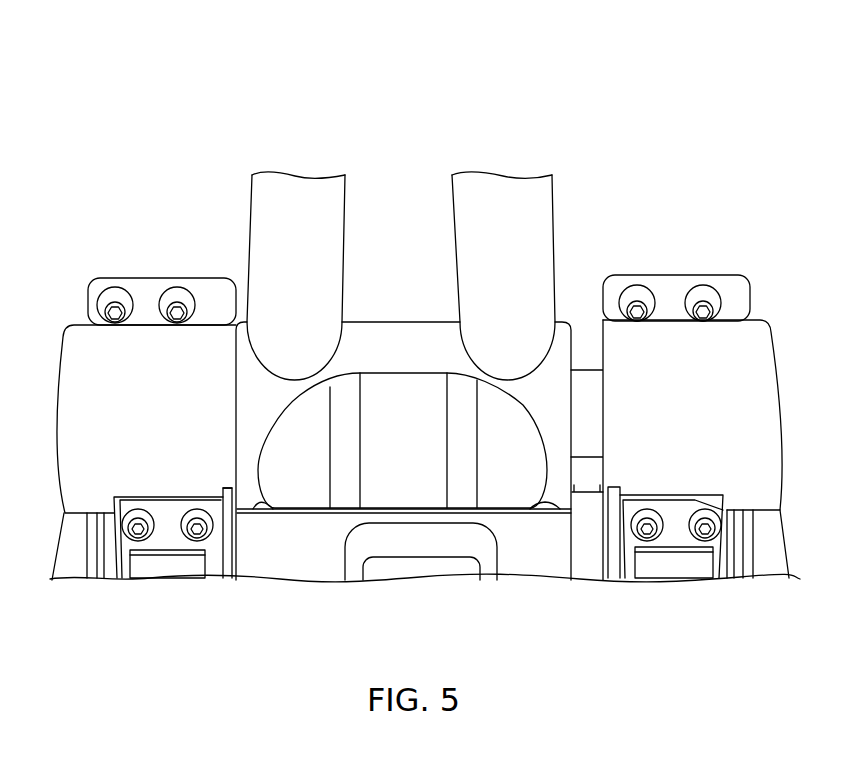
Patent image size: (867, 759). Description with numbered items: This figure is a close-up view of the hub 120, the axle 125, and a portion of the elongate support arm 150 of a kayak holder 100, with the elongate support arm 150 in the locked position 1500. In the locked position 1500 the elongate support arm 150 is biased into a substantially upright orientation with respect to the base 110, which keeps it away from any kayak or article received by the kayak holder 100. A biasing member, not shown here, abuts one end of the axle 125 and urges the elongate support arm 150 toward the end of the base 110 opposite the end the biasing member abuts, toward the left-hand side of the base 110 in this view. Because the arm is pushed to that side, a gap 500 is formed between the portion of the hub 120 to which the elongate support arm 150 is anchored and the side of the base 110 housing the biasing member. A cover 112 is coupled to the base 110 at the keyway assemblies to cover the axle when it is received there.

The locked position 1500 is at (173, 46).
The kayak holder 100 is at (112, 184).
The base 110 is at (147, 290).
The cover 112 is at (77, 340).
The hub 120 is at (393, 332).
The axle 125 is at (590, 377).
The elongate support arm 150 is at (257, 208).
The gap 500 is at (585, 498).